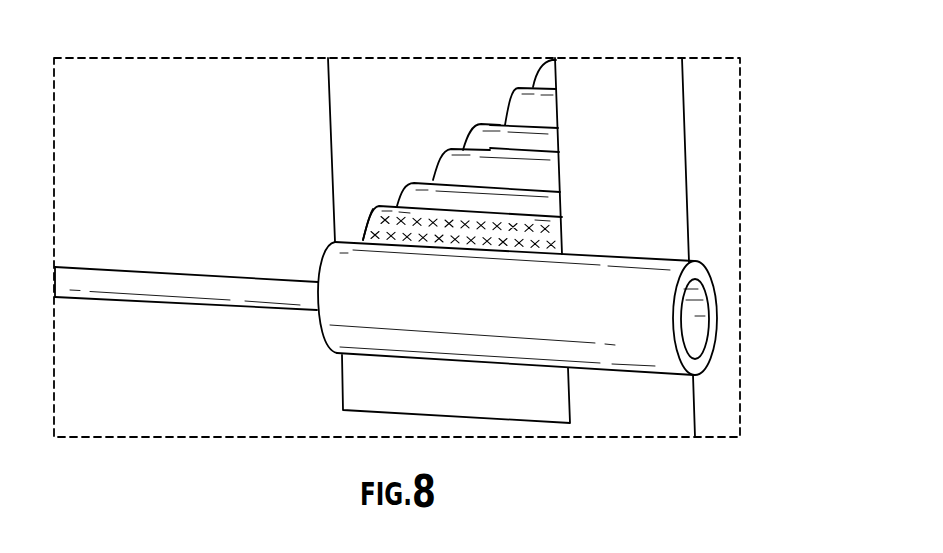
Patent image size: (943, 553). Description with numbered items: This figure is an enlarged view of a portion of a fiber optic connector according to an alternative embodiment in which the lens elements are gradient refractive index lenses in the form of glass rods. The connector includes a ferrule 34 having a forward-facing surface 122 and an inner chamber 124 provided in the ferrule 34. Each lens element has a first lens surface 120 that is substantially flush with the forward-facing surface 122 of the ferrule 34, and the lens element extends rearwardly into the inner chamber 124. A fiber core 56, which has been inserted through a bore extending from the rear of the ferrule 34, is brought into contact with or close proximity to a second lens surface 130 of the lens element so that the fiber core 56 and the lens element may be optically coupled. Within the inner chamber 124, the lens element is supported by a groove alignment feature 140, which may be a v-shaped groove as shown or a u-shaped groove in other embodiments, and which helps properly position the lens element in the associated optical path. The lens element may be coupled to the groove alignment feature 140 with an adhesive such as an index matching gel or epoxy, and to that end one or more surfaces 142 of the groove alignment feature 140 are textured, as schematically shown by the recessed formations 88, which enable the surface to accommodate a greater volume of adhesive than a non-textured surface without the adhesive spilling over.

The ferrule 34 is at (336, 93).
The inner chamber 124 is at (458, 92).
The forward-facing surface 122 is at (704, 126).
The groove alignment feature 140 is at (433, 199).
The surface of groove alignment feature 142 is at (368, 222).
The formations 88 is at (547, 227).
The second lens surface 130 is at (318, 266).
The first lens surface 120 is at (717, 325).
The fiber core 56 is at (207, 307).